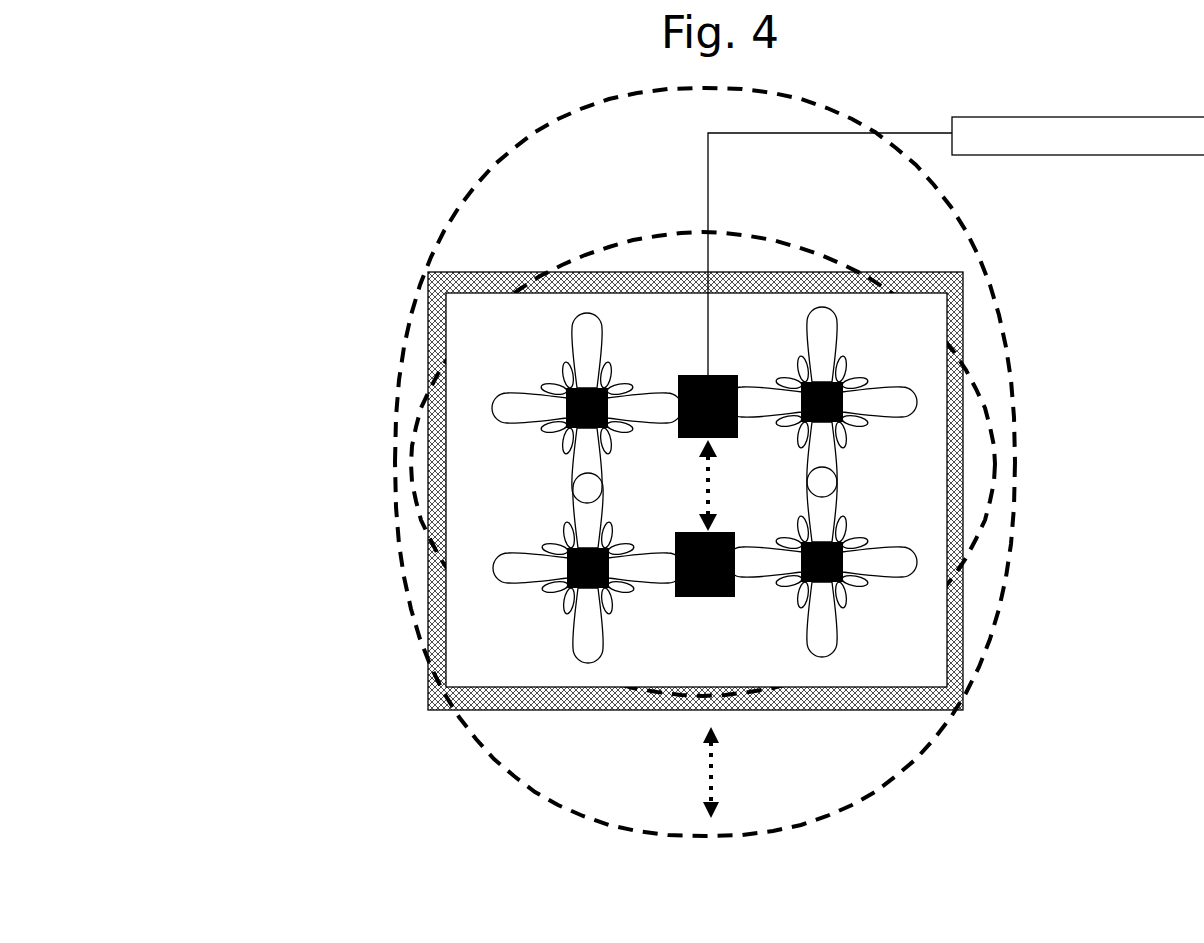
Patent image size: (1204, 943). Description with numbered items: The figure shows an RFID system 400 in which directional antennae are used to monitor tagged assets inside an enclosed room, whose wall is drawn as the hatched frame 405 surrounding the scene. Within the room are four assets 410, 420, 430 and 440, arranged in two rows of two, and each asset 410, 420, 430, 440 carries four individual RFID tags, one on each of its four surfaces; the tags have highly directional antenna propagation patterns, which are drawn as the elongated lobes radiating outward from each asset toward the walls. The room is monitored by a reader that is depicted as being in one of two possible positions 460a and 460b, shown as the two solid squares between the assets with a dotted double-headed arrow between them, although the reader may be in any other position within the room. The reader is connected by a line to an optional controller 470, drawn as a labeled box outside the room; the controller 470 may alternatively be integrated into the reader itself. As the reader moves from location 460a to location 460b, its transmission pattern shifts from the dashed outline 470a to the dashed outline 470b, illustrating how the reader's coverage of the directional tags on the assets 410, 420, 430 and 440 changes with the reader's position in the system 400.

The RFID system 400 is at (286, 146).
The frame 405 is at (428, 559).
The asset 410 is at (550, 364).
The asset 420 is at (866, 362).
The asset 430 is at (792, 605).
The asset 440 is at (535, 607).
The reader position 460a is at (689, 443).
The reader position 460b is at (702, 603).
The controller 470 is at (1087, 117).
The transmission pattern 470a is at (522, 128).
The transmission pattern 470b is at (473, 746).